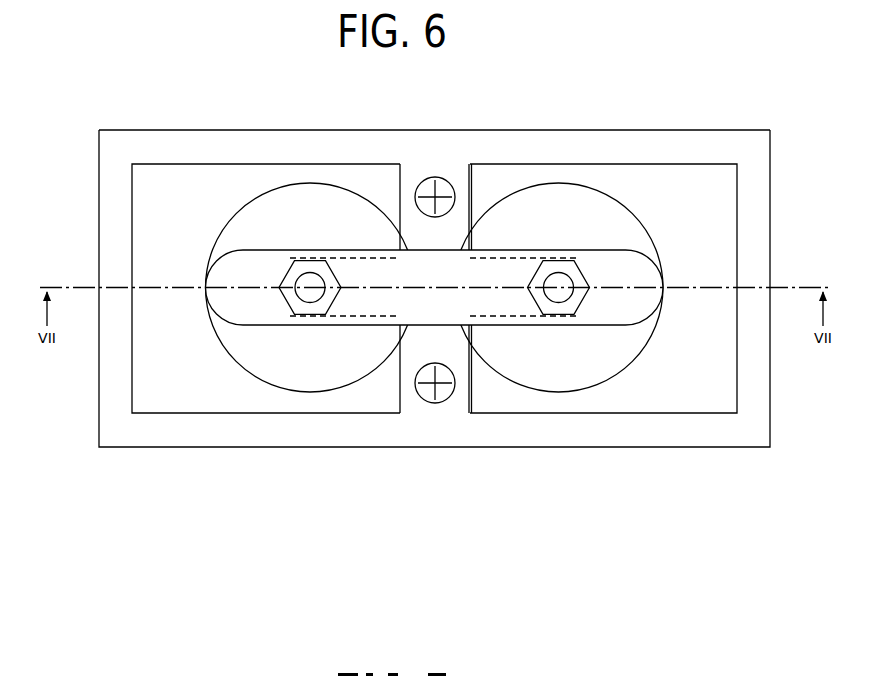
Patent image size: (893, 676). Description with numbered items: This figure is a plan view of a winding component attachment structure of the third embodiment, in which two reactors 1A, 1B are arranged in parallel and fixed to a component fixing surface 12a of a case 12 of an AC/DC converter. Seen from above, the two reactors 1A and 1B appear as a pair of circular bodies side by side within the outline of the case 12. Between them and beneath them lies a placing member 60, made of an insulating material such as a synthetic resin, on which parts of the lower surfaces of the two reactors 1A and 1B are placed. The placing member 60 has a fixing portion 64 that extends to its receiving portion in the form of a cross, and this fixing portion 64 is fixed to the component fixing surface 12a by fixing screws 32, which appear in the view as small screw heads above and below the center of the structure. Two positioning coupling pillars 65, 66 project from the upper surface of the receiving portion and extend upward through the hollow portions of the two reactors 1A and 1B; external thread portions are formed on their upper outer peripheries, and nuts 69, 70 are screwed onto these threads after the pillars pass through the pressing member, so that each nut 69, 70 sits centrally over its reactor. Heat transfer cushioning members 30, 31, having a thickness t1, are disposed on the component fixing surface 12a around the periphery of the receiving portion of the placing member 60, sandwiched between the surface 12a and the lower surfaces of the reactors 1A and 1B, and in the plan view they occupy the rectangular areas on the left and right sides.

The reactor 1A is at (285, 212).
The reactor 1B is at (590, 210).
The case 12 is at (771, 205).
The component fixing surface 12a is at (698, 150).
The heat transfer cushioning member 30 is at (193, 385).
The heat transfer cushioning member 31 is at (674, 387).
The fixing screw 32 is at (442, 178).
The placing member 60 is at (458, 363).
The fixing portion 64 is at (407, 393).
The positioning coupling pillar 65 is at (312, 293).
The positioning coupling pillar 66 is at (557, 293).
The nut 69 is at (313, 267).
The nut 70 is at (560, 267).